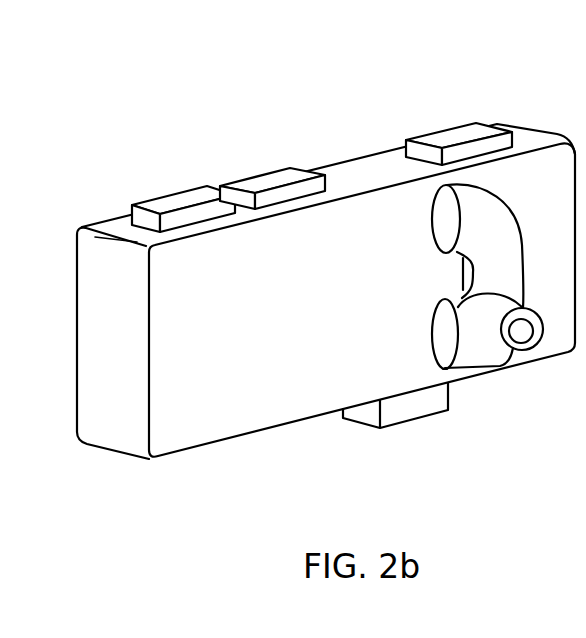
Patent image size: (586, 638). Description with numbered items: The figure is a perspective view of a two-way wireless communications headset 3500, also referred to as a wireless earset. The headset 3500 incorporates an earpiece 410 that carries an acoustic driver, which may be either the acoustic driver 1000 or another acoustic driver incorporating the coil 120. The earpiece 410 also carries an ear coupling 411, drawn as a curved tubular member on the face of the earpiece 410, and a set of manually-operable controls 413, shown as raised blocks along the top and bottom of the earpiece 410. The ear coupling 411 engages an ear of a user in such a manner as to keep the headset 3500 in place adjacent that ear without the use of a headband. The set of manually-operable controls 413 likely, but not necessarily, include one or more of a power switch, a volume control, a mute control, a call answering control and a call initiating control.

The two-way wireless communications headset 3500 is at (196, 46).
The earpiece 410 is at (275, 328).
The set of manually-operable controls 413 is at (185, 198).
The ear coupling 411 is at (485, 334).
The coil 120 is at (533, 408).
The acoustic driver 1000 is at (523, 342).